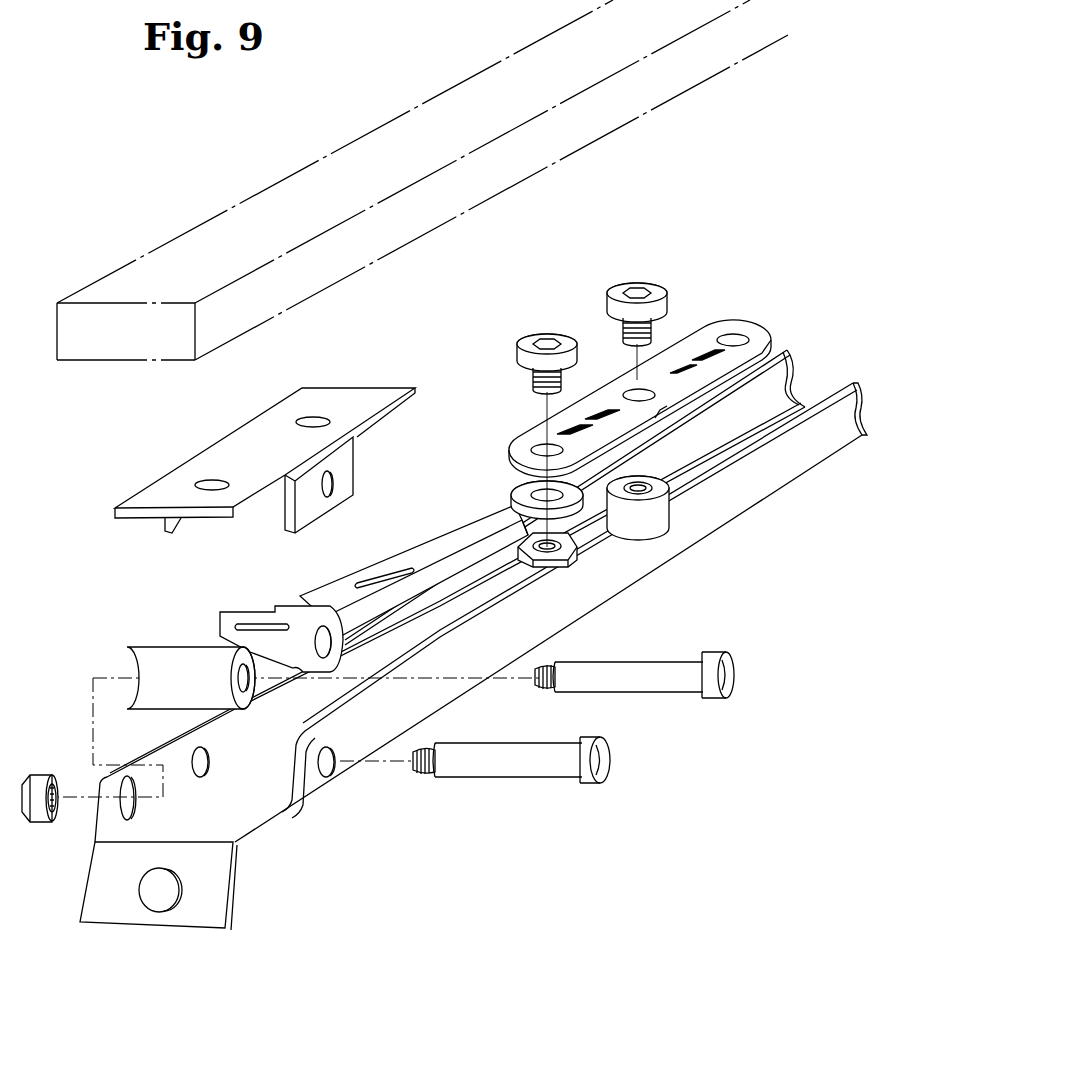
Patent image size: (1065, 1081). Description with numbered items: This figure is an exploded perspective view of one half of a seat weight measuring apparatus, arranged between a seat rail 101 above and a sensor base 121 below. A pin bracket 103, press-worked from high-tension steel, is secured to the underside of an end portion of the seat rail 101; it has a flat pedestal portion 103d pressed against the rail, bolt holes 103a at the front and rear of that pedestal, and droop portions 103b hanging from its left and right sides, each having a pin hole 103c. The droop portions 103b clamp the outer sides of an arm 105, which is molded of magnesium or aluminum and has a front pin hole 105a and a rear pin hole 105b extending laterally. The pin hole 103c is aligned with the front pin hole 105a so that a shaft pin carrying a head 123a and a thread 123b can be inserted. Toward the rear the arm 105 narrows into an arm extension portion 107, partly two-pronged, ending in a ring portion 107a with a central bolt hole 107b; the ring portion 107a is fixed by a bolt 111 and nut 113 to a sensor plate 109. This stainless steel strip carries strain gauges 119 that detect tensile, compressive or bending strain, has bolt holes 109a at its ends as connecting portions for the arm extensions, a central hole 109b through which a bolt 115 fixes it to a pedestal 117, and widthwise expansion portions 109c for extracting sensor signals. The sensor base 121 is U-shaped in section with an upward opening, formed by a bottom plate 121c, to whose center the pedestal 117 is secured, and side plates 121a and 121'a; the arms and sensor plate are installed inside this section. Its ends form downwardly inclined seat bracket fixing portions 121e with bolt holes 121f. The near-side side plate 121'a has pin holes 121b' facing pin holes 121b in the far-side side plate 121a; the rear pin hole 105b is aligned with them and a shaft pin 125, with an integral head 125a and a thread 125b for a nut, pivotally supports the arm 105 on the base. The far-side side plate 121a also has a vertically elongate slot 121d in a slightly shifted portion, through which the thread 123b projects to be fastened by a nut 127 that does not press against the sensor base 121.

The seat rail 101 is at (208, 240).
The pin bracket 103 is at (258, 452).
The bolt holes 103a is at (320, 420).
The droop portions 103b is at (343, 457).
The pin hole 103c is at (333, 492).
The pedestal portion 103d is at (258, 440).
The arm 105 is at (226, 630).
The front pin hole 105a is at (223, 640).
The rear pin hole 105b is at (305, 604).
The arm extension portion 107 is at (508, 532).
The ring portion 107a is at (522, 485).
The bolt hole 107b is at (578, 542).
The sensor plate 109 is at (667, 426).
The bolt holes 109a is at (532, 448).
The hole 109b is at (655, 388).
The widthwise expansion portions 109c is at (668, 412).
The bolt 111 is at (526, 346).
The nut 113 is at (570, 549).
The bolt 115 is at (638, 290).
The pedestal 117 is at (672, 483).
The strain gauges 119 is at (724, 358).
The sensor base 121 is at (462, 663).
The side plate 121a is at (218, 733).
The side plate 121'a is at (466, 726).
The pin holes 121b is at (231, 776).
The pin holes 121b' is at (359, 790).
The bottom plate 121c is at (247, 812).
The vertically elongate slot 121d is at (134, 808).
The seat bracket fixing portions 121e is at (213, 875).
The bolt holes 121f is at (172, 887).
The bolt head 123a is at (710, 692).
The thread 123b is at (545, 690).
The shaft pin 125 is at (516, 785).
The head 125a is at (597, 783).
The thread 125b is at (421, 776).
The nut 127 is at (38, 822).